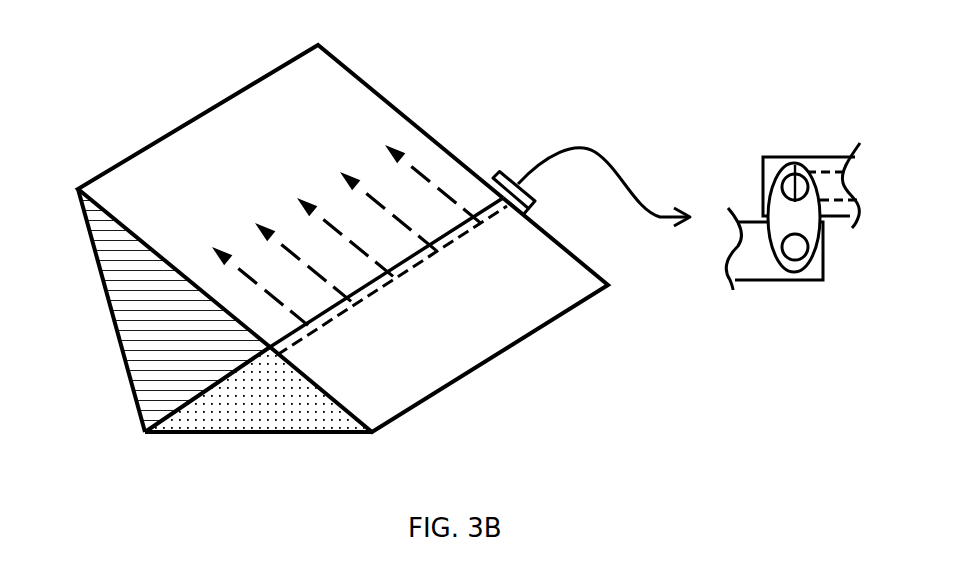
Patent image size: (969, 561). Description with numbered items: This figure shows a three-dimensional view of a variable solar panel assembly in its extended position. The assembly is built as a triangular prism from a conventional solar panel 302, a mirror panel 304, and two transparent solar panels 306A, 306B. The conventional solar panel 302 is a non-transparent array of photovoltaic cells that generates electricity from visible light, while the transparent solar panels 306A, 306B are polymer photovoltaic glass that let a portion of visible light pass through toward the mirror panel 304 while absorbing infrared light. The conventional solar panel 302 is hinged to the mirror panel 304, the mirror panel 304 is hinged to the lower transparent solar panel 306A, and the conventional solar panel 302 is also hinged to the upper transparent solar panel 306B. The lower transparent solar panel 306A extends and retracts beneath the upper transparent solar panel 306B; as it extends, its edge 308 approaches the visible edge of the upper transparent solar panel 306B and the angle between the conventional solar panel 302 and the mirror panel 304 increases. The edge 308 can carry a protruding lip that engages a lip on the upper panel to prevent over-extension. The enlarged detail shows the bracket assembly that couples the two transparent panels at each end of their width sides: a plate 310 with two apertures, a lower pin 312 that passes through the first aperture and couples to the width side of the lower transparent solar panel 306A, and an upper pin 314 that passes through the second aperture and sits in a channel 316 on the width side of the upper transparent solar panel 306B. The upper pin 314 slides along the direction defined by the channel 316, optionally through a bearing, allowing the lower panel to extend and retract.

The conventional solar panel 302 is at (246, 402).
The mirror panel 304 is at (133, 313).
The transparent solar panel 306A is at (348, 93).
The transparent solar panel 306B is at (493, 343).
The edge 308 is at (412, 260).
The plate 310 is at (808, 228).
The lower pin 312 is at (795, 236).
The upper pin 314 is at (793, 168).
The channel 316 is at (840, 187).